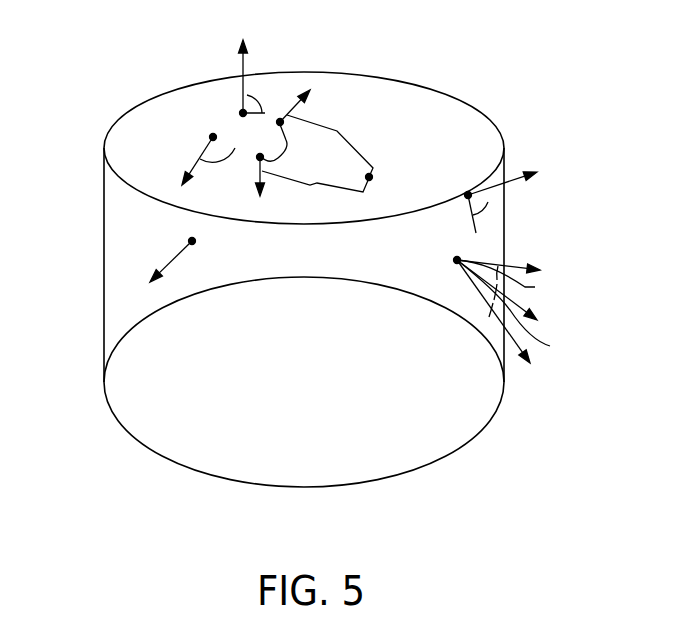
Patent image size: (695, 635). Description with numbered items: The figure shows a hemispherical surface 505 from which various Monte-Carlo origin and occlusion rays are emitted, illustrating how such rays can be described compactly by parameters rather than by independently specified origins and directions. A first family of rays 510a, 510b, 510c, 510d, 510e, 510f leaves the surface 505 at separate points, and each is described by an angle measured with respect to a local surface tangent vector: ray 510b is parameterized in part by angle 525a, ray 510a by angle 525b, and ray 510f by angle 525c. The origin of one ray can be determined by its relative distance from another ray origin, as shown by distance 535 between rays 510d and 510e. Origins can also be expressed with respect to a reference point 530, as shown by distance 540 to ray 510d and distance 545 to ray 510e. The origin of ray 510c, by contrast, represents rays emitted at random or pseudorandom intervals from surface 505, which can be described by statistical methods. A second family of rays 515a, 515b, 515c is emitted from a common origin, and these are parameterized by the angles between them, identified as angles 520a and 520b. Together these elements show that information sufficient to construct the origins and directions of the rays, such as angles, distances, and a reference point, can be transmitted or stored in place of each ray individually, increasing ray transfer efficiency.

The hemispherical surface 505 is at (437, 95).
The ray 510a is at (241, 63).
The ray 510b is at (197, 157).
The ray 510c is at (172, 260).
The ray 510d is at (288, 100).
The ray 510e is at (262, 171).
The ray 510f is at (512, 173).
The ray 515a is at (522, 268).
The ray 515b is at (513, 345).
The ray 515c is at (533, 303).
The angle 520a is at (525, 281).
The angle 520b is at (530, 310).
The angle 525a is at (218, 161).
The angle 525b is at (248, 96).
The angle 525c is at (486, 201).
The reference point 530 is at (370, 179).
The distance 535 is at (294, 146).
The distance 540 is at (331, 142).
The distance 545 is at (315, 193).